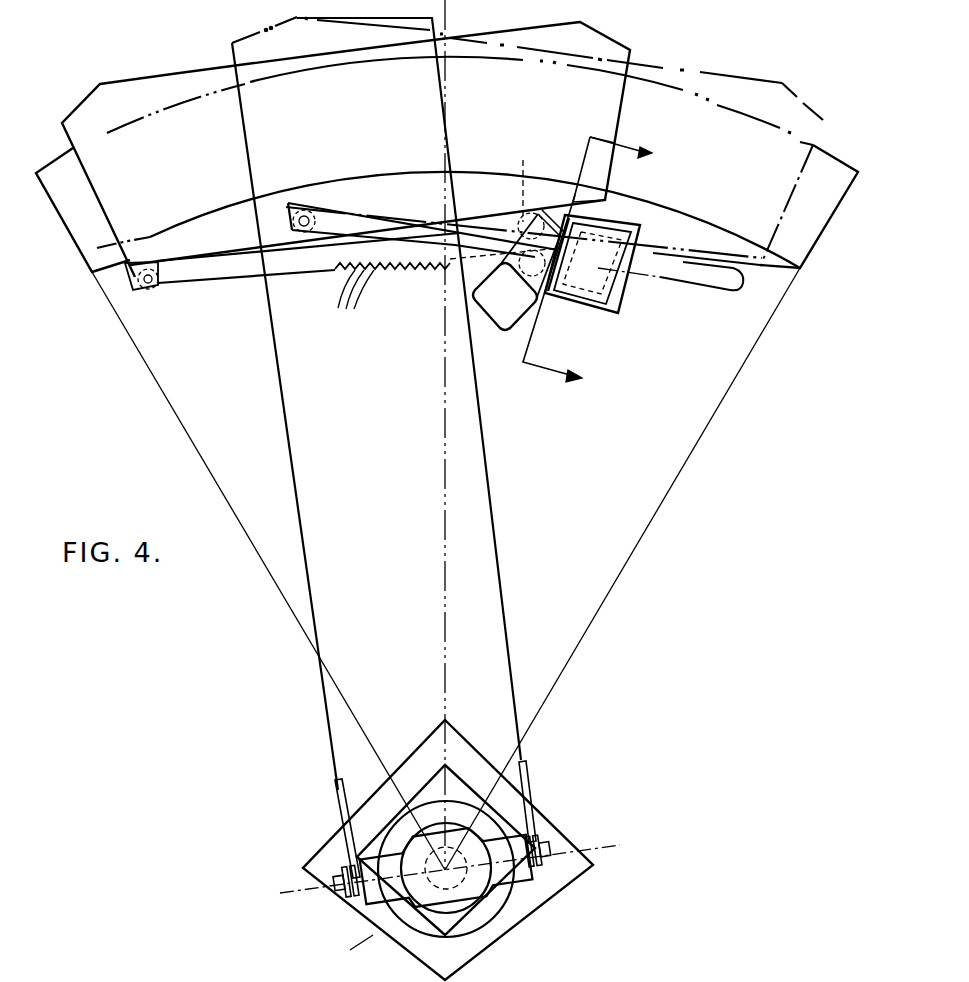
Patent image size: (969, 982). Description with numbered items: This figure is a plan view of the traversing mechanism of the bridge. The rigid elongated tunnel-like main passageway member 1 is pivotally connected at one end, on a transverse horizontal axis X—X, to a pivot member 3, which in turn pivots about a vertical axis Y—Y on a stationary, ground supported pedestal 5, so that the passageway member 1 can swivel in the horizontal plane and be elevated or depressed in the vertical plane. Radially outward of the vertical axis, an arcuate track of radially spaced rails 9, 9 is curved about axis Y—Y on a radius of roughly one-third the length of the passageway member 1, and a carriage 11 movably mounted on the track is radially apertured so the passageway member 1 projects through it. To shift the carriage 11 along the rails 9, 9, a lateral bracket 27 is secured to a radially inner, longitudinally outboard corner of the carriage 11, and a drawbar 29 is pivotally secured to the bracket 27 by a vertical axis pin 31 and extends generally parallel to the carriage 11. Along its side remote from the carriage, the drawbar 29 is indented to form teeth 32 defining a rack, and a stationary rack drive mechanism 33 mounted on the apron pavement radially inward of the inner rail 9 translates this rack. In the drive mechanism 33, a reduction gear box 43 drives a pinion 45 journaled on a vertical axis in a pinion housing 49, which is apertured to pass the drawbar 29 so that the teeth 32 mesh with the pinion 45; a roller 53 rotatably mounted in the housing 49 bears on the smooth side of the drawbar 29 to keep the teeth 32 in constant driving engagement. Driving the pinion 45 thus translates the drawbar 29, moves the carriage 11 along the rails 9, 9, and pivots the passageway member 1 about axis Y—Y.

The main passageway member 1 is at (292, 463).
The pivot member 3 is at (482, 893).
The pedestal 5 is at (553, 815).
The rails 9 is at (833, 158).
The carriage 11 is at (204, 78).
The lateral bracket 27 is at (140, 283).
The drawbar 29 is at (210, 285).
The vertical axis pin 31 is at (154, 292).
The teeth 32 is at (441, 292).
The rack drive mechanism 33 is at (614, 308).
The reduction gear box 43 is at (472, 292).
The pinion 45 is at (548, 282).
The pinion housing 49 is at (526, 230).
The roller 53 is at (522, 181).